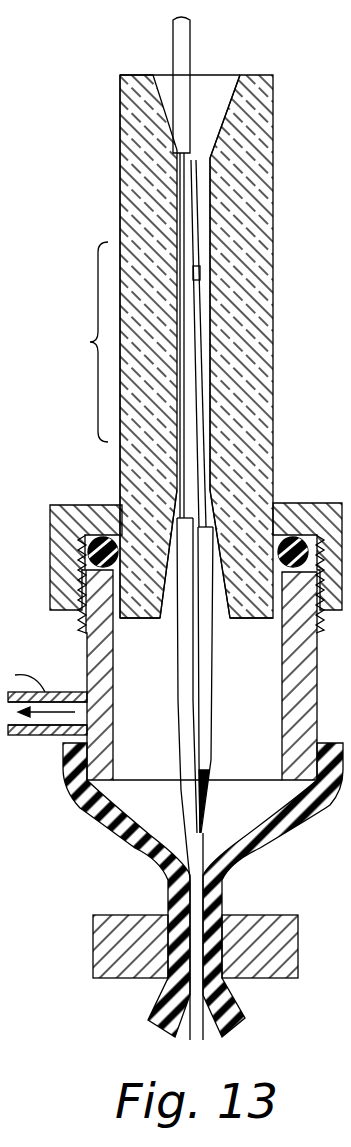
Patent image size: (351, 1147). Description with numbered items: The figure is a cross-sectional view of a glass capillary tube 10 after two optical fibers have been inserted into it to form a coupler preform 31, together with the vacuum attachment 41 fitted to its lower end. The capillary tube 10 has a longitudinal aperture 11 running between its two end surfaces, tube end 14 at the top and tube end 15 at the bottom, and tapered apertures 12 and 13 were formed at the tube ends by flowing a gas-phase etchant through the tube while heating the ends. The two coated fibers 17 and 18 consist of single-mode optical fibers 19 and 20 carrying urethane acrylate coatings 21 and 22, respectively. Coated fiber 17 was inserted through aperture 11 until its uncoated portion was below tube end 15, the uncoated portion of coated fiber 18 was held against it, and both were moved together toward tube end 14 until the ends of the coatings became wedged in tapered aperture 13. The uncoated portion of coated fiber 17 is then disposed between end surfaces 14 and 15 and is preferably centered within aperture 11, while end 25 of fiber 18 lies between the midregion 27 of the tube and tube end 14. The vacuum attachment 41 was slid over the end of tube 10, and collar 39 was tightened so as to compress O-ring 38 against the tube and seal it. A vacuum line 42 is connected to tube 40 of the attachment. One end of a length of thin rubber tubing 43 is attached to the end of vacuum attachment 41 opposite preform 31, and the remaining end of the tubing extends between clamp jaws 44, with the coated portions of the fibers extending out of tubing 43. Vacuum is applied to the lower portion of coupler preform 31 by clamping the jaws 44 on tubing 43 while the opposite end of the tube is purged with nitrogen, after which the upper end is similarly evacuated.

The glass capillary tube 10 is at (273, 107).
The aperture 11 is at (202, 275).
The tapered aperture 12 is at (223, 97).
The tapered aperture 13 is at (232, 607).
The tube end 14 is at (132, 76).
The tube end 15 is at (139, 618).
The coated fiber 17 is at (165, 32).
The coated fiber 18 is at (215, 797).
The single-mode optical fiber 19 is at (183, 362).
The single-mode optical fiber 20 is at (200, 410).
The urethane acrylate coating 21 is at (186, 32).
The urethane acrylate coating 22 is at (208, 693).
The end of fiber 18 25 is at (194, 176).
The midregion 27 is at (77, 342).
The coupler preform 31 is at (112, 135).
The O-ring 38 is at (294, 540).
The collar 39 is at (77, 505).
The tube 40 is at (84, 650).
The vacuum attachment 41 is at (42, 548).
The vacuum line 42 is at (32, 735).
The thin rubber tubing 43 is at (283, 830).
The clamp jaws 44 is at (95, 948).